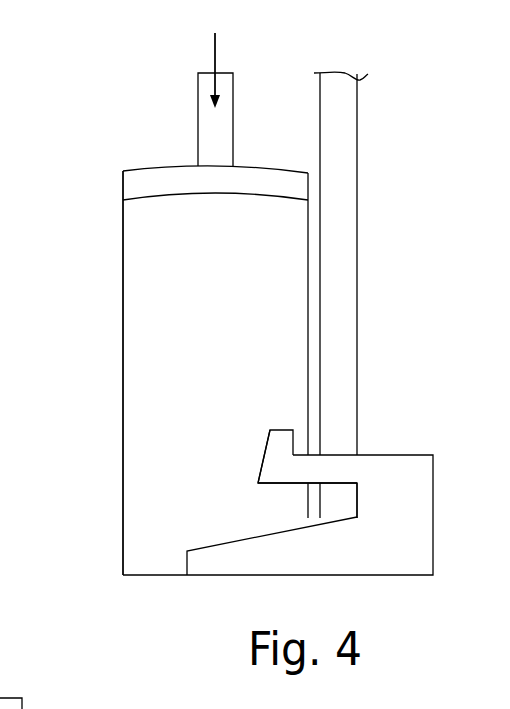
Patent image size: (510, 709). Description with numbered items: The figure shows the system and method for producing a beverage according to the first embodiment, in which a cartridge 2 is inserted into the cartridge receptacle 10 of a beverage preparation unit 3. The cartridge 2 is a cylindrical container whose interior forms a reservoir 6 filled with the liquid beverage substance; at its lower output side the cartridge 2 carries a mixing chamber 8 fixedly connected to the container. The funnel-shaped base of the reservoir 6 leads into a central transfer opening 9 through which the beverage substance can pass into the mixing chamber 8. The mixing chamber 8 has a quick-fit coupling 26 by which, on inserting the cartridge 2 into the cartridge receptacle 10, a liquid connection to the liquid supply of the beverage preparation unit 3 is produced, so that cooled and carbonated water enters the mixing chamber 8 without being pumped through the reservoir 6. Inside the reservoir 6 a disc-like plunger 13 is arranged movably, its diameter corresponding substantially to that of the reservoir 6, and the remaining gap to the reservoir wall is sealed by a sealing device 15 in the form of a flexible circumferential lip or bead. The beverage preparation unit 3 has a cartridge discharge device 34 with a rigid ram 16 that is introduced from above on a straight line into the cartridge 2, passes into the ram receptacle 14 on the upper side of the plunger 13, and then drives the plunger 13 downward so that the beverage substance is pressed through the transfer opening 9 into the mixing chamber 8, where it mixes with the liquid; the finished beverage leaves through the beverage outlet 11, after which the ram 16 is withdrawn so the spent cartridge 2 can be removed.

The cartridge 2 is at (168, 107).
The beverage preparation unit 3 is at (332, 265).
The reservoir 6 is at (258, 353).
The mixing chamber 8 is at (258, 473).
The transfer opening 9 is at (285, 443).
The cartridge receptacle 10 is at (340, 525).
The beverage outlet 11 is at (240, 553).
The plunger 13 is at (280, 197).
The ram receptacle 14 is at (197, 165).
The sealing device 15 is at (120, 187).
The ram 16 is at (233, 98).
The quick-fit coupling 26 is at (338, 473).
The cartridge discharge device 34 is at (250, 93).